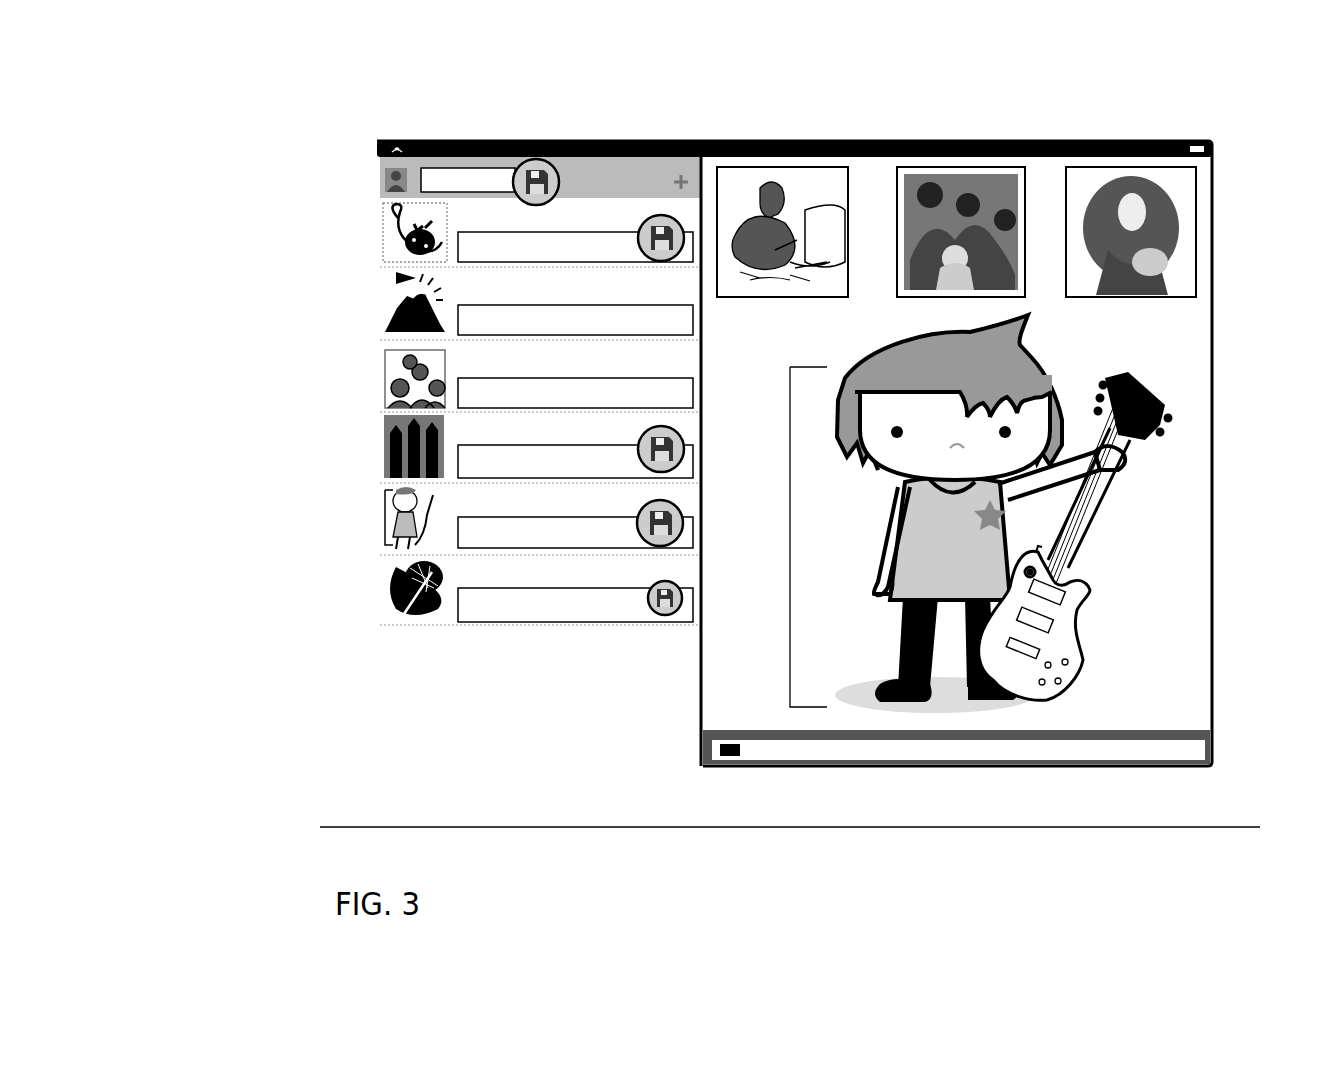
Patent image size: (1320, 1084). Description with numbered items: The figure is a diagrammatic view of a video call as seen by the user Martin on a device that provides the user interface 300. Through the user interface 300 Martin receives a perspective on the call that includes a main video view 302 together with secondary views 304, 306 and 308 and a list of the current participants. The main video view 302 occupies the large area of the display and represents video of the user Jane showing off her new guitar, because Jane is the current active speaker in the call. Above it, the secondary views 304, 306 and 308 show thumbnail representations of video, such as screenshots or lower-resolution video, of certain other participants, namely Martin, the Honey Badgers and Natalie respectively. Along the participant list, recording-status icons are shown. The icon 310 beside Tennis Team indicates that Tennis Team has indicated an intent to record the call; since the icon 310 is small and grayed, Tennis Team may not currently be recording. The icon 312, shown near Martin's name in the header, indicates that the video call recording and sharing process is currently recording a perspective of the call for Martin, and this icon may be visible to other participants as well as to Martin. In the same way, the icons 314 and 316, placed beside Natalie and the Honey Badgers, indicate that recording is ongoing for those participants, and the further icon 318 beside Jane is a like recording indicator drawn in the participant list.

The user interface 300 is at (320, 123).
The main video view 302 is at (1212, 561).
The secondary view 304 is at (848, 175).
The secondary view 306 is at (1028, 174).
The secondary view 308 is at (1195, 180).
The icon 310 is at (685, 598).
The icon 312 is at (548, 180).
The icon 314 is at (637, 217).
The icon 316 is at (686, 449).
The save button for Jane conversation 318 is at (685, 520).